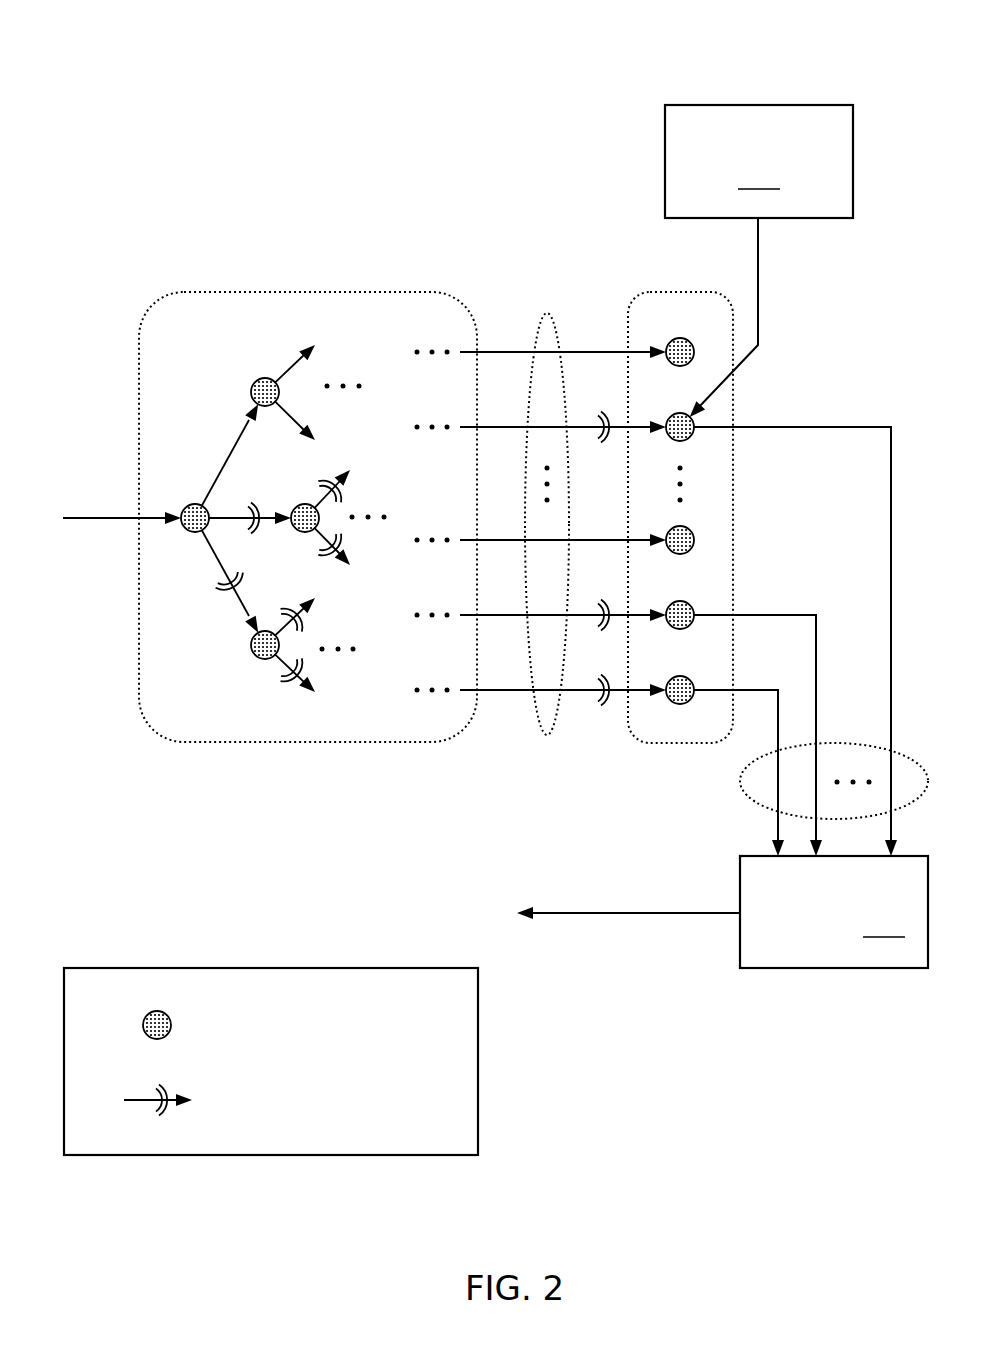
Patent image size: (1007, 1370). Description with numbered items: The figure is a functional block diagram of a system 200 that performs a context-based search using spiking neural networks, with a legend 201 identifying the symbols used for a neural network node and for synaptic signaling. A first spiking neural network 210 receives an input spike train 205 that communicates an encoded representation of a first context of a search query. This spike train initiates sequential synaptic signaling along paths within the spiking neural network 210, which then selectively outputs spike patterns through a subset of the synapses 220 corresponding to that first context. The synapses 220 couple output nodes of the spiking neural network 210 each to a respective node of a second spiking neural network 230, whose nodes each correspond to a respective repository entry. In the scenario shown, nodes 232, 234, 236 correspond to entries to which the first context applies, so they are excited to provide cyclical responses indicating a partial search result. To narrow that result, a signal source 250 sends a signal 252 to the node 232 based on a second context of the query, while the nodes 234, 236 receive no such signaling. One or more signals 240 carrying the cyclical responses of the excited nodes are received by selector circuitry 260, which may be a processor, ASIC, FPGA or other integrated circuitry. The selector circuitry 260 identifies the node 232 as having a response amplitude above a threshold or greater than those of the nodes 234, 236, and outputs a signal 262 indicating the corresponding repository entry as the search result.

The system 200 is at (122, 62).
The legend 201 is at (140, 967).
The spike train 205 is at (122, 505).
The spiking neural network 210 is at (273, 292).
The synapses 220 is at (547, 733).
The spiking neural network 230 is at (734, 560).
The node 232 is at (693, 437).
The node 234 is at (695, 607).
The node 236 is at (677, 703).
The signals 240 is at (737, 780).
The signal source 250 is at (759, 161).
The signal 252 is at (758, 280).
The selector circuitry 260 is at (834, 912).
The signal 262 is at (608, 913).